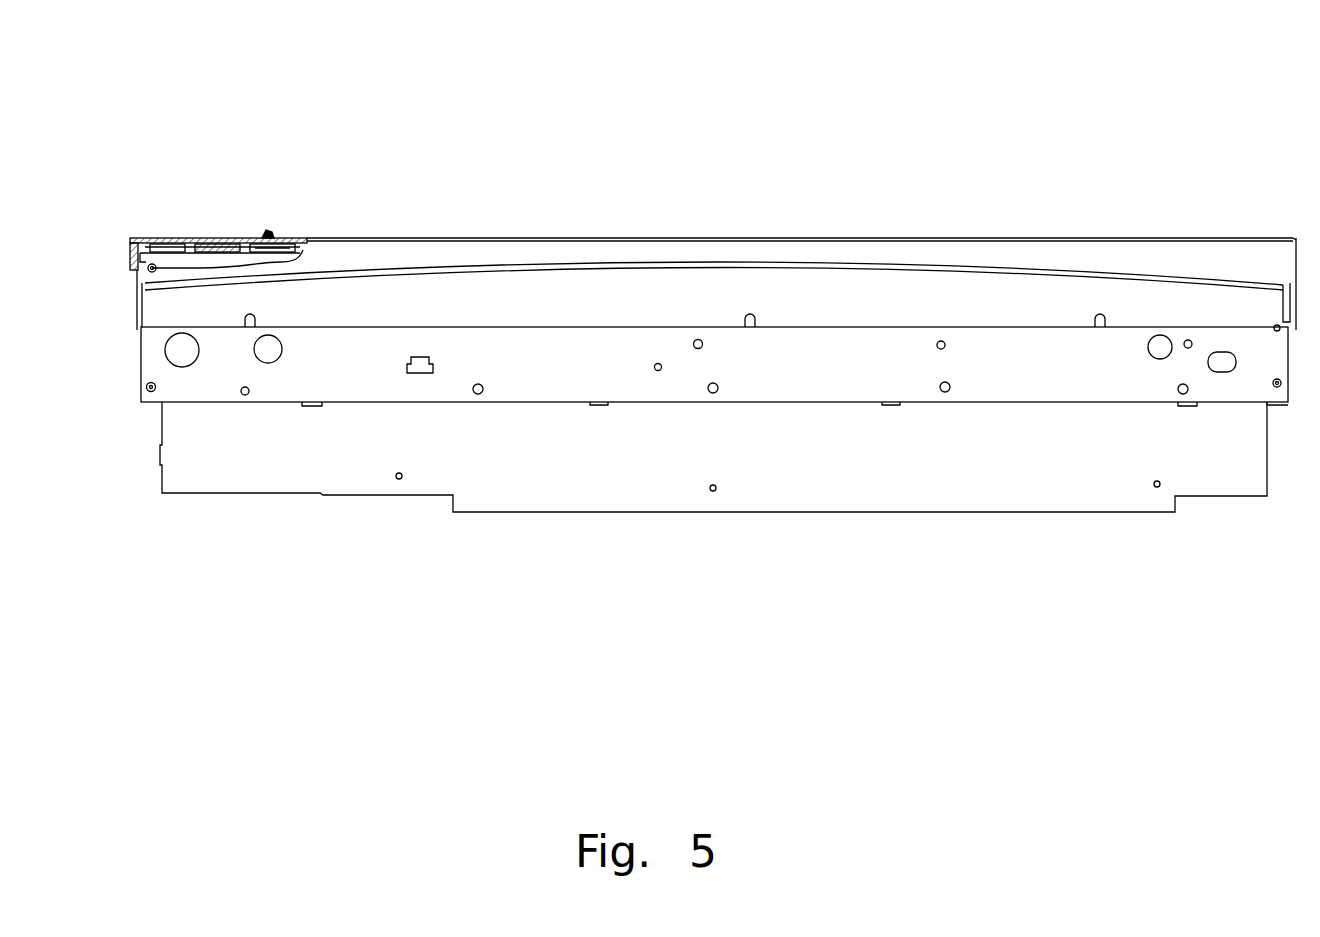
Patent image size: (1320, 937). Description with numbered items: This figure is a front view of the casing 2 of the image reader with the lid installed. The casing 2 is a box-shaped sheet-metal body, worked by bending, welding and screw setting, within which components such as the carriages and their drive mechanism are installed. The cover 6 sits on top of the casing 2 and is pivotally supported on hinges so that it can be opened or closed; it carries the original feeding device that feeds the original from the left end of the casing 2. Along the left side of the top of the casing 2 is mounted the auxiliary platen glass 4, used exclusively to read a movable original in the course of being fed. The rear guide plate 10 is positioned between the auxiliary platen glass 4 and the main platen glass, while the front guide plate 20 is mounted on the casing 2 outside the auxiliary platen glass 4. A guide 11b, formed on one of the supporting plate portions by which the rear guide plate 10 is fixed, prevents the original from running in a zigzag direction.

The casing 2 is at (622, 345).
The auxiliary platen glass 4 is at (222, 241).
The cover 6 is at (134, 238).
The rear guide plate 10 is at (300, 236).
The guide 11b is at (268, 234).
The front guide plate 20 is at (170, 238).